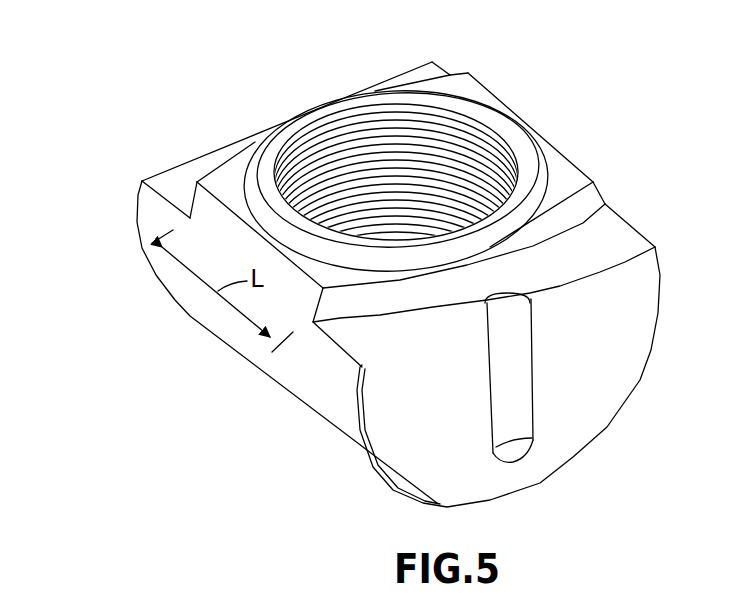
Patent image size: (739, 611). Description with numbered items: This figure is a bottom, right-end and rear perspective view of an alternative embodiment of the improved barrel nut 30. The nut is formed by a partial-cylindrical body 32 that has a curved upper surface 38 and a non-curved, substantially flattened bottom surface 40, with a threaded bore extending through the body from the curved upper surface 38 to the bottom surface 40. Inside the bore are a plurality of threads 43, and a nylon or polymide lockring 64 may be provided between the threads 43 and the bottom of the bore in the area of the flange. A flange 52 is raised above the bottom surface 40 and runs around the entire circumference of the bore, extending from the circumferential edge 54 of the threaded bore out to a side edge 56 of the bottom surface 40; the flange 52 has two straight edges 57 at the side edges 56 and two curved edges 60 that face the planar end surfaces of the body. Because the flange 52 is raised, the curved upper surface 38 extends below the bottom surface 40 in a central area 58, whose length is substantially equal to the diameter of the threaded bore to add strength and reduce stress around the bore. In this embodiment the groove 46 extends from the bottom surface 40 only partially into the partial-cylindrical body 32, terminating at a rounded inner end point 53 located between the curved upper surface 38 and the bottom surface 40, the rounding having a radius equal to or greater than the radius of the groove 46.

The barrel nut 30 is at (64, 202).
The partial-cylindrical body 32 is at (294, 368).
The curved upper surface 38 is at (630, 397).
The bottom surface 40 is at (172, 188).
The threads 43 is at (348, 150).
The groove 46 is at (514, 371).
The flange 52 is at (567, 183).
The inner end point 53 is at (540, 442).
The circumferential edge 54 is at (533, 160).
The side edge 56 is at (620, 205).
The straight edge 57 is at (225, 202).
The central area 58 is at (190, 218).
The curved edge 60 is at (383, 295).
The lockring 64 is at (405, 102).